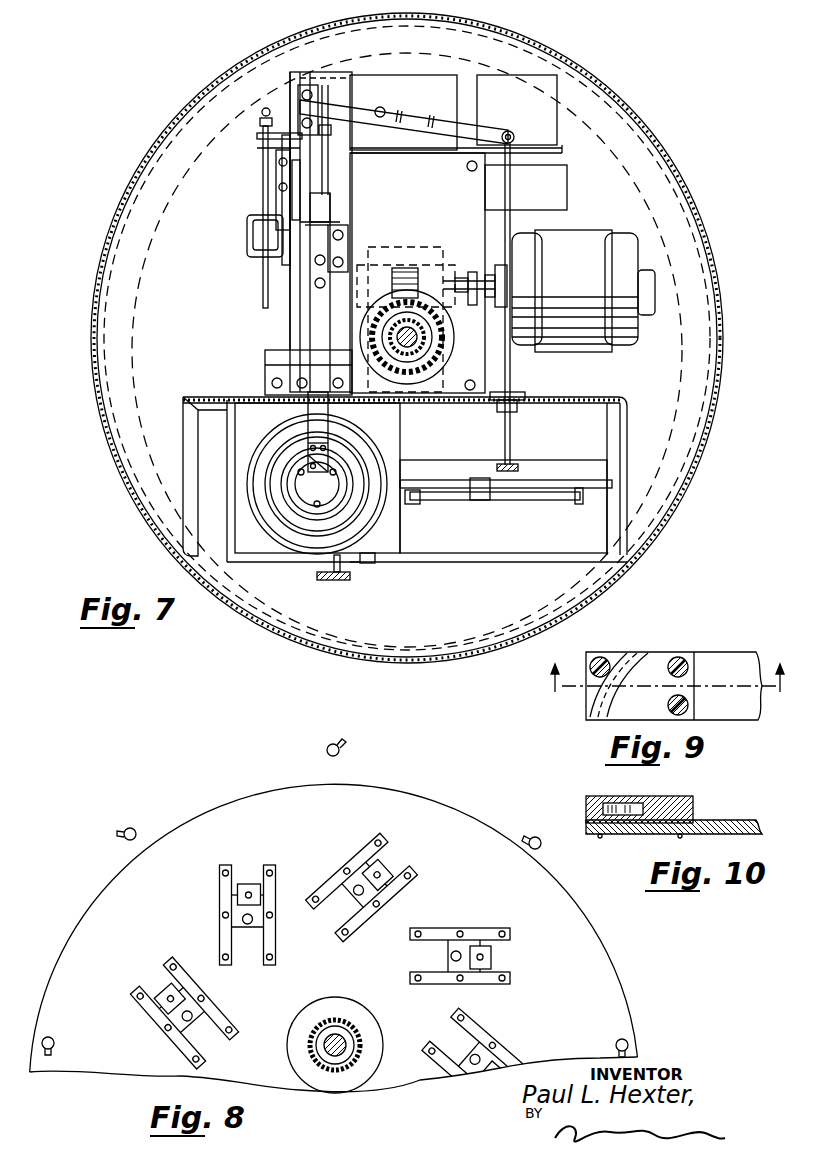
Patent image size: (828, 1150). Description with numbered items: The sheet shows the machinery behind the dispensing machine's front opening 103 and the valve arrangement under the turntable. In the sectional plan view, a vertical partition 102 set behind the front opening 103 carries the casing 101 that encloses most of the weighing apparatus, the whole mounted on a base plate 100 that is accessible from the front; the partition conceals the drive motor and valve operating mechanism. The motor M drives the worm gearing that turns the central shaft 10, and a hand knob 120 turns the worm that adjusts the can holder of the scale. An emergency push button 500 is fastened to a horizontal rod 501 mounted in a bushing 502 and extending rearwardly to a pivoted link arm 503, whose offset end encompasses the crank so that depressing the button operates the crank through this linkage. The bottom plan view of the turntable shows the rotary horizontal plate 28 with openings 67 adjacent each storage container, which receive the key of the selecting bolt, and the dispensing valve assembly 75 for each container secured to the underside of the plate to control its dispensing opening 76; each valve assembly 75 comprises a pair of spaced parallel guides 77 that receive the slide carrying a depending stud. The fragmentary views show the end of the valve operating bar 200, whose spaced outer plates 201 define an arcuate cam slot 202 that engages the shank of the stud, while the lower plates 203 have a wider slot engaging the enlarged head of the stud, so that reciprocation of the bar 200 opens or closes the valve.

In FIG. 7, the pivoted link arm 503 is at (482, 131).
In FIG. 7, the horizontal rod 501 is at (505, 205).
In FIG. 7, the motor M is at (580, 240).
In FIG. 7, the bushing 502 is at (520, 400).
In FIG. 7, the push button 500 is at (519, 467).
In FIG. 7, the vertical partition 102 is at (633, 426).
In FIG. 7, the casing 101 is at (446, 462).
In FIG. 7, the base plate 100 is at (510, 556).
In FIG. 7, the hand knob 120 is at (342, 578).
In FIG. 7, the front opening 103 is at (293, 638).
In FIG. 8, the openings 67 is at (338, 744).
In FIG. 8, the horizontal plate 28 is at (486, 790).
In FIG. 8, the spaced parallel guides 77 is at (378, 848).
In FIG. 8, the dispensing opening 76 is at (386, 872).
In FIG. 8, the dispensing valve assembly 75 is at (437, 932).
In FIG. 9, the outer plates 201 is at (627, 656).
In FIG. 9, the arcuate cam slot 202 is at (650, 672).
In FIG. 9, the valve operating bar 200 is at (750, 642).
In FIG. 10, the valve operating bar 200 is at (745, 826).
In FIG. 9, the central shaft 10 is at (666, 696).
In FIG. 10, the lower plates 203 is at (690, 812).